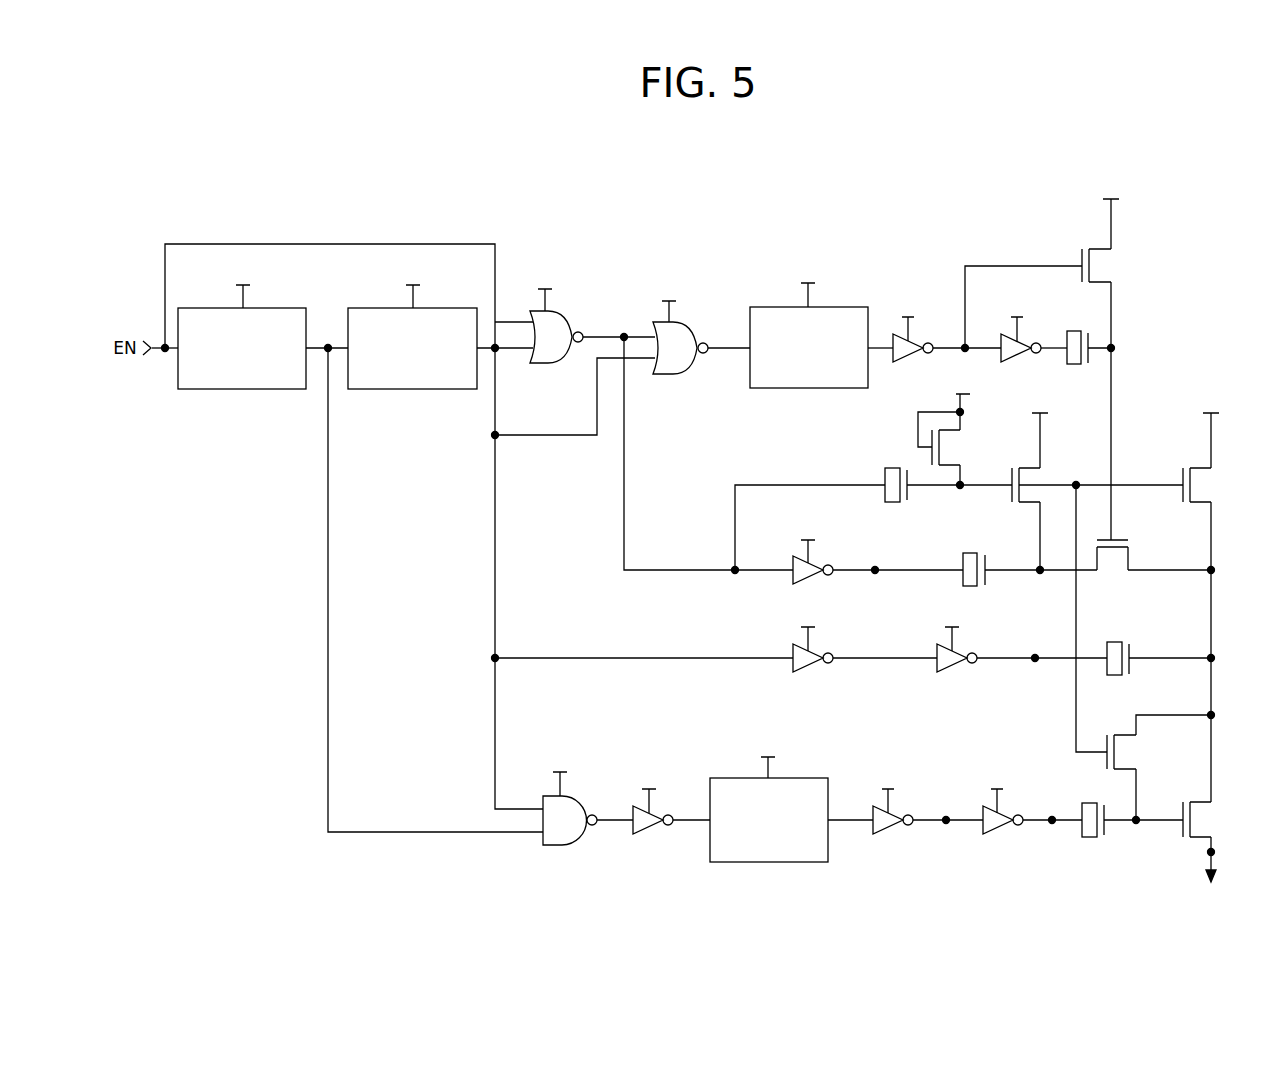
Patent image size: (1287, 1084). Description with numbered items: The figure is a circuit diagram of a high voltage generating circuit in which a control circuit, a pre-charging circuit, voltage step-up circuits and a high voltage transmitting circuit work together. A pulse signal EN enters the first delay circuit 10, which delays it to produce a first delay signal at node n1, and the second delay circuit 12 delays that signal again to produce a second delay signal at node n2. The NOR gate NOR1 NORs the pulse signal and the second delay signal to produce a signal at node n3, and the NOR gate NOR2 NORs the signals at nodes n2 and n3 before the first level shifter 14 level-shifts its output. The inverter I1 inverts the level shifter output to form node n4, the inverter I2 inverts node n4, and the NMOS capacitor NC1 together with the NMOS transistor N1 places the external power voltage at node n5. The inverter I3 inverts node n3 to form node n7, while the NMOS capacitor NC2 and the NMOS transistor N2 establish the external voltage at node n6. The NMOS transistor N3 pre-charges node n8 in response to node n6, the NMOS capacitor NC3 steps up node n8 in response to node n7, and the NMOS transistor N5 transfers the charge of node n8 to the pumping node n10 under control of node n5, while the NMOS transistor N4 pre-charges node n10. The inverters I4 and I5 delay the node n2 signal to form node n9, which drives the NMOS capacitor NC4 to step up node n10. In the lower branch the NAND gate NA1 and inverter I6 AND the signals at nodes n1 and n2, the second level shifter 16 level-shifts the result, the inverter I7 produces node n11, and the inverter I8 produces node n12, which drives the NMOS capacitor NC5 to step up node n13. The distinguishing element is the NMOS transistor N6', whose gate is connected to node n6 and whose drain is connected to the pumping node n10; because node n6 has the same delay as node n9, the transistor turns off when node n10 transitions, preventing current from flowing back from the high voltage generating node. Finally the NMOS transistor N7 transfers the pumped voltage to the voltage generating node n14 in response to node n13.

The first delay circuit 10 is at (243, 392).
The second delay circuit 12 is at (413, 392).
The first level shifter 14 is at (806, 391).
The second level shifter 16 is at (777, 864).
The NOR gate NOR1 is at (548, 365).
The NOR gate NOR2 is at (675, 376).
The NAND gate NA1 is at (575, 847).
The inverter I1 is at (921, 335).
The inverter I2 is at (1029, 335).
The inverter I3 is at (820, 558).
The inverter I4 is at (815, 670).
The inverter I5 is at (959, 670).
The inverter I6 is at (655, 832).
The inverter I7 is at (895, 832).
The inverter I8 is at (1005, 832).
The NMOS transistor N1 is at (1108, 357).
The NMOS transistor N2 is at (952, 427).
The NMOS transistor N3 is at (1097, 480).
The NMOS transistor N4 is at (1208, 596).
The NMOS transistor N5 is at (1112, 556).
The NMOS transistor N6' is at (1130, 777).
The NMOS transistor N7 is at (1210, 857).
The NMOS capacitor NC1 is at (1078, 328).
The NMOS capacitor NC2 is at (880, 468).
The NMOS capacitor NC3 is at (958, 555).
The NMOS capacitor NC4 is at (1136, 652).
The NMOS capacitor NC5 is at (1095, 838).
The node 1 n1 is at (424, 576).
The node 2 n2 is at (505, 339).
The node 3 n3 is at (703, 442).
The node 4 n4 is at (1011, 309).
The node 5 n5 is at (1125, 347).
The node 6 n6 is at (982, 499).
The node 7 n7 is at (876, 559).
The node 8 n8 is at (1054, 560).
The node 9 n9 is at (1036, 648).
The node 10 n10 is at (1231, 659).
The node 11 n11 is at (957, 833).
The node 12 n12 is at (1052, 809).
The node 13 n13 is at (1155, 810).
The voltage generating node n14 is at (1246, 851).